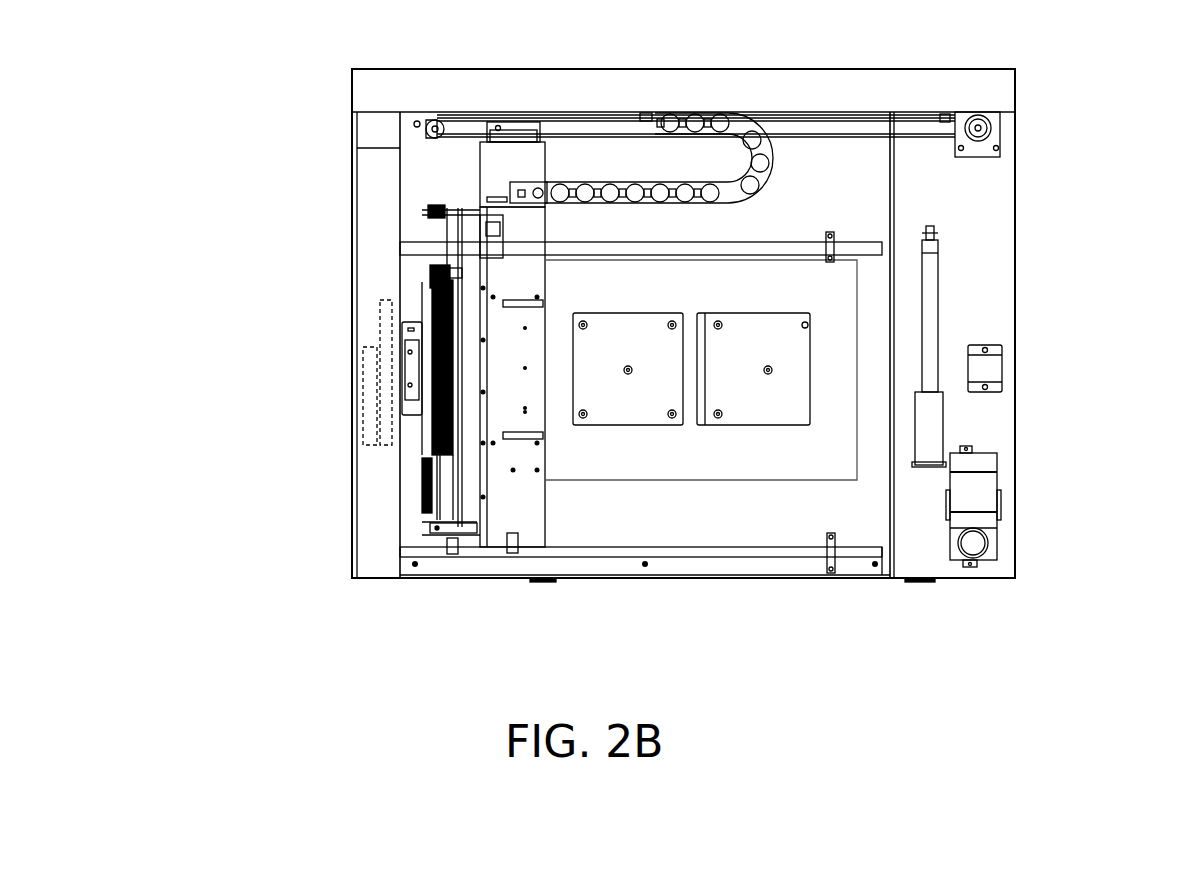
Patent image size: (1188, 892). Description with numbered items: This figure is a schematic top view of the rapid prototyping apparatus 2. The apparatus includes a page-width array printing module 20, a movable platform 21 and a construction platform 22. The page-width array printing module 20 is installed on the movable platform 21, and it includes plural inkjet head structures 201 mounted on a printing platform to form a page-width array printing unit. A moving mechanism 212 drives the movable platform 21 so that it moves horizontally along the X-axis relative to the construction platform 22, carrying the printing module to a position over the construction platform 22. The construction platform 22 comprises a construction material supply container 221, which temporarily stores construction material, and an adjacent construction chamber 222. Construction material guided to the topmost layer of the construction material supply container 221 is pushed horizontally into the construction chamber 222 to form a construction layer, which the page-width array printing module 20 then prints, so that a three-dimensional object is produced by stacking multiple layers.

The rapid prototyping apparatus 2 is at (1163, 94).
The page-width array printing module 20 is at (430, 295).
The inkjet head structures 201 is at (430, 455).
The movable platform 21 is at (513, 160).
The moving mechanism 212 is at (553, 112).
The construction platform 22 is at (783, 293).
The construction material supply container 221 is at (623, 427).
The construction chamber 222 is at (740, 312).